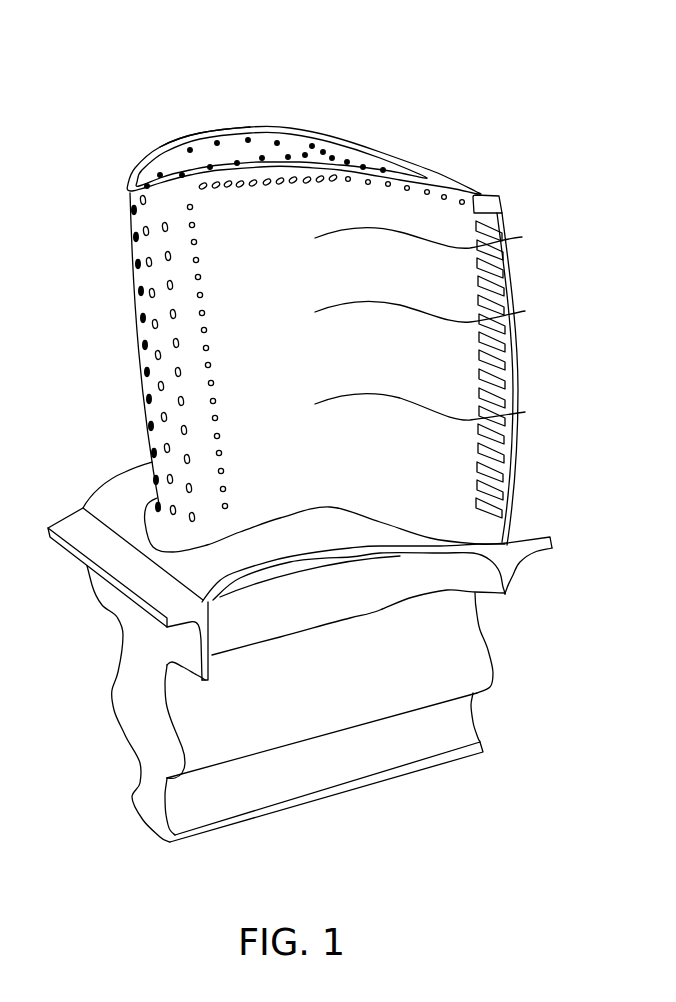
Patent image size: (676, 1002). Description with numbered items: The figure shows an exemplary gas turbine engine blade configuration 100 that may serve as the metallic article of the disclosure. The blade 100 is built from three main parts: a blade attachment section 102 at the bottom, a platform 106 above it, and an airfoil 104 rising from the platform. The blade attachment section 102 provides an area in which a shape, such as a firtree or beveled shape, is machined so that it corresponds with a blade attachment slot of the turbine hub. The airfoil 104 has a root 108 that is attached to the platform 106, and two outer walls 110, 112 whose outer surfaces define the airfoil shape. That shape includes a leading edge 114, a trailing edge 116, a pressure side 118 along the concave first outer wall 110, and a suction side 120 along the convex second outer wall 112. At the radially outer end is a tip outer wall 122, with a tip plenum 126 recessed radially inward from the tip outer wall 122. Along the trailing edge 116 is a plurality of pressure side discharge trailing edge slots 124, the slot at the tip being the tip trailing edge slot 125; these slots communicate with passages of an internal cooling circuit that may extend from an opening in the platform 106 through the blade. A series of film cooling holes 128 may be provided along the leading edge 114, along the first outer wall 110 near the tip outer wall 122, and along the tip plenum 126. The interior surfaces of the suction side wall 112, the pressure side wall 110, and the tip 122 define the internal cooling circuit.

The gas turbine engine blade configuration 100 is at (466, 108).
The blade attachment section 102 is at (317, 738).
The airfoil 104 is at (348, 351).
The platform 106 is at (152, 592).
The root 108 is at (368, 500).
The first outer wall 110 is at (434, 242).
The second outer wall 112 is at (316, 134).
The leading edge 114 is at (147, 340).
The trailing edge 116 is at (502, 205).
The pressure side 118 is at (439, 412).
The suction side 120 is at (141, 157).
The tip outer wall 122 is at (196, 131).
The pressure side discharge trailing edge slots 124 is at (507, 347).
The tip trailing edge slot 125 is at (481, 204).
The tip plenum 126 is at (243, 144).
The film cooling holes 128 is at (135, 259).